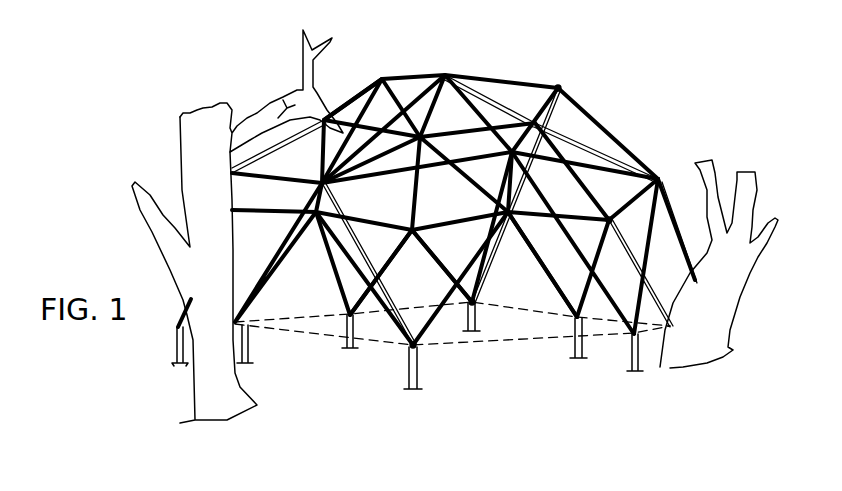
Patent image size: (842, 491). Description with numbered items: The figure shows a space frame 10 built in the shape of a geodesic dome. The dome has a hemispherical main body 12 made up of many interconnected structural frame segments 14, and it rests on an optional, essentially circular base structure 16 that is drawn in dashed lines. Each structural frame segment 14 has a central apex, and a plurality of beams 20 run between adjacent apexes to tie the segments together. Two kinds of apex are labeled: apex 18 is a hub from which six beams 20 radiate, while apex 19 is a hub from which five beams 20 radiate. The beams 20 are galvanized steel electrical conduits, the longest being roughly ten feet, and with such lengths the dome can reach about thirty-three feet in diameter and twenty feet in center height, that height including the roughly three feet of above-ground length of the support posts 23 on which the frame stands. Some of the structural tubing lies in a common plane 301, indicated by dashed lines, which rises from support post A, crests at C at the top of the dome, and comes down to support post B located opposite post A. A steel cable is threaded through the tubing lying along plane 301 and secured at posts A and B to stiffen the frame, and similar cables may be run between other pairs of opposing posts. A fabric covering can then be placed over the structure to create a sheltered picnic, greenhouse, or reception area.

The space frame 10 is at (523, 66).
The hemispherical main body 12 is at (360, 76).
The structural frame segment 14 is at (541, 283).
The base structure 16 is at (370, 347).
The apex 18 is at (420, 133).
The apex 19 is at (610, 219).
The beam 20 is at (590, 140).
The support post 23 is at (406, 392).
The common plane 301 is at (411, 272).
The support post A is at (417, 346).
The support post B is at (475, 301).
The crest C is at (566, 74).